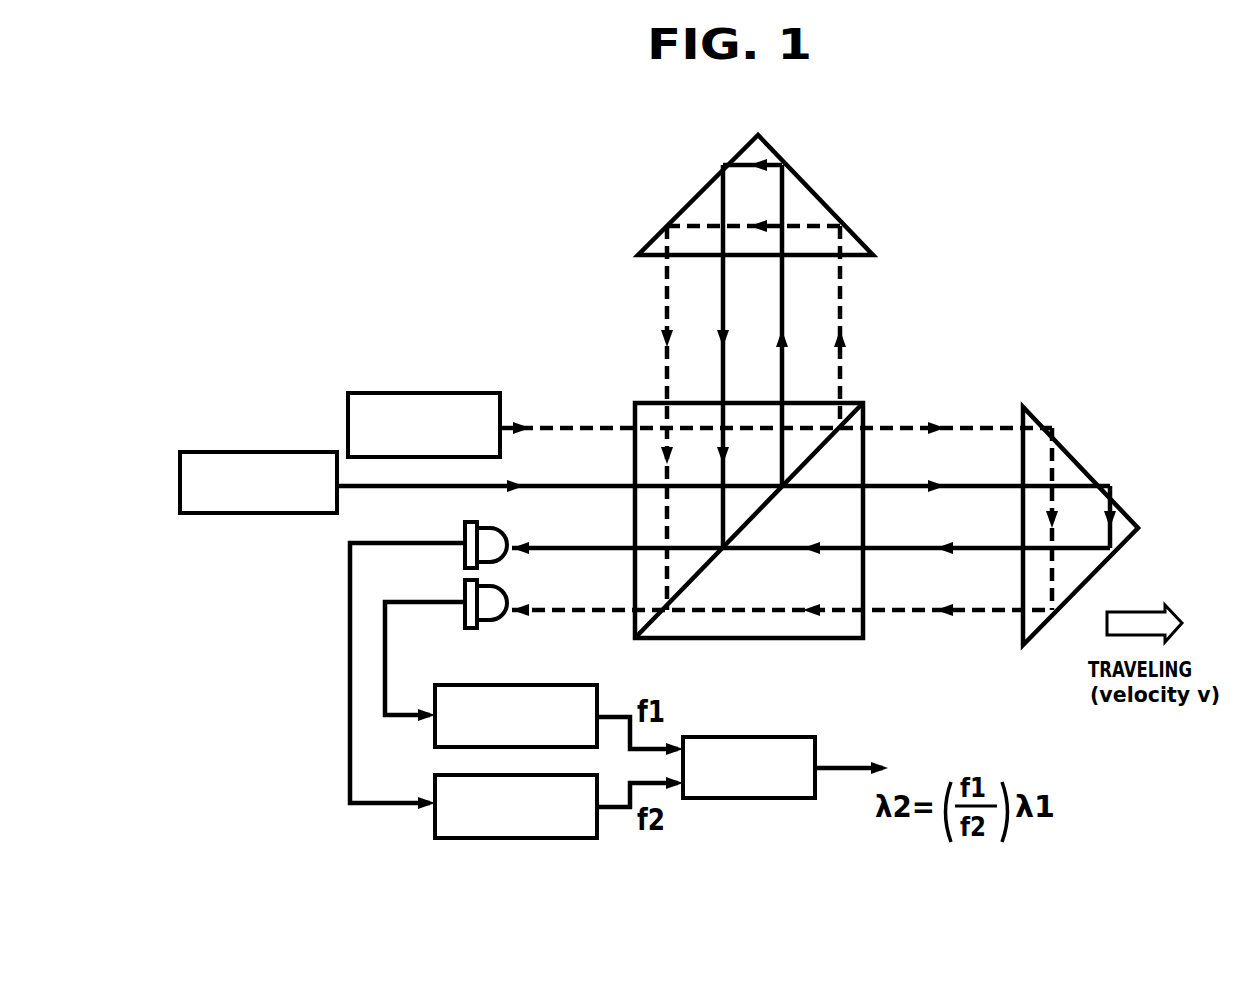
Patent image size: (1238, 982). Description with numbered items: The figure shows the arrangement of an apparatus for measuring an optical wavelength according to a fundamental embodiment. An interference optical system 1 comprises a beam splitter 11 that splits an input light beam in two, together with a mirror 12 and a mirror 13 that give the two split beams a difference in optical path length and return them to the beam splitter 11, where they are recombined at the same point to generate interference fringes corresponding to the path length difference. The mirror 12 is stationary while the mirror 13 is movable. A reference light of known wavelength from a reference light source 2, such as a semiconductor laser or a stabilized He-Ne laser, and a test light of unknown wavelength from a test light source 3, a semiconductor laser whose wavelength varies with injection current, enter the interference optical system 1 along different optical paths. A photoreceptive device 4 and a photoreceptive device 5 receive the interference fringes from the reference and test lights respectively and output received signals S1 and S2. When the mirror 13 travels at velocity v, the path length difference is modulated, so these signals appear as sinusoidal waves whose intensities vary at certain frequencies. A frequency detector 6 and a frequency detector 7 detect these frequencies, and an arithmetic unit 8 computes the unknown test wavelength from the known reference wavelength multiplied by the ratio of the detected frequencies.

The interference optical system 1 is at (940, 284).
The reference light source 2 is at (440, 393).
The test light source 3 is at (275, 452).
The photoreceptive device 4 is at (487, 628).
The photoreceptive device 5 is at (505, 527).
The frequency detector 6 is at (565, 685).
The frequency detector 7 is at (508, 838).
The arithmetic unit 8 is at (752, 737).
The beam splitter 11 is at (637, 400).
The mirror 12 is at (816, 195).
The mirror 13 is at (1074, 460).
The received signal S1 is at (385, 648).
The received signal S2 is at (348, 692).